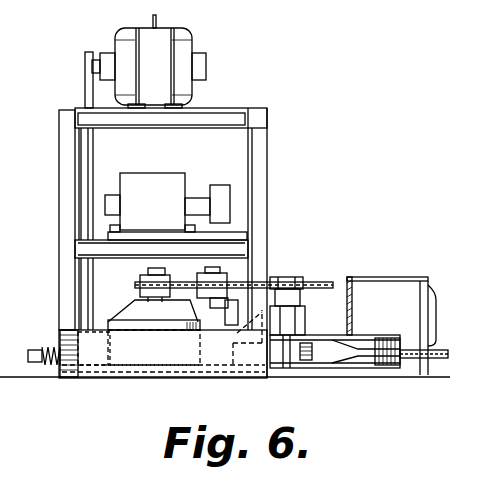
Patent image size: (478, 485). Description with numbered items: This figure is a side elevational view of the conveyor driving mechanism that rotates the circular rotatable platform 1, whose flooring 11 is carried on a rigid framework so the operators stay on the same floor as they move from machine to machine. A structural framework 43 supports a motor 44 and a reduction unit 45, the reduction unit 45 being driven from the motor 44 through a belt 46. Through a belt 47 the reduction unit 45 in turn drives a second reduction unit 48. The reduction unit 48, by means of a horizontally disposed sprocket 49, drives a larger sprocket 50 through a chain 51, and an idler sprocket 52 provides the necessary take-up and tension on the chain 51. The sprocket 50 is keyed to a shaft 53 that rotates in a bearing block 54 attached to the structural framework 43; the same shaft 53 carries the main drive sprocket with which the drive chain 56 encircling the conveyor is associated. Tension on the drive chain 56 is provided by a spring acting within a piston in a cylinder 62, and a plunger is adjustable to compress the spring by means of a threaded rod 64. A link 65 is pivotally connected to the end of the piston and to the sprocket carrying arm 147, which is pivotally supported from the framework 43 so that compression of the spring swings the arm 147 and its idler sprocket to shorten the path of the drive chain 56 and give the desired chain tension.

The circular rotatable platform 1 is at (360, 262).
The flooring 11 is at (395, 277).
The structural framework 43 is at (267, 130).
The motor 44 is at (185, 38).
The reduction unit 45 is at (172, 185).
The belt 46 is at (78, 152).
The belt 47 is at (85, 283).
The second reduction unit 48 is at (156, 322).
The horizontally disposed sprocket 49 is at (140, 282).
The larger sprocket 50 is at (285, 276).
The chain 51 is at (302, 281).
The idler sprocket 52 is at (215, 268).
The shaft 53 is at (300, 299).
The bearing block 54 is at (302, 324).
The drive chain 56 is at (420, 368).
The cylinder 62 is at (88, 367).
The threaded rod 64 is at (47, 347).
The link 65 is at (318, 368).
The sprocket carrying arm 147 is at (368, 368).